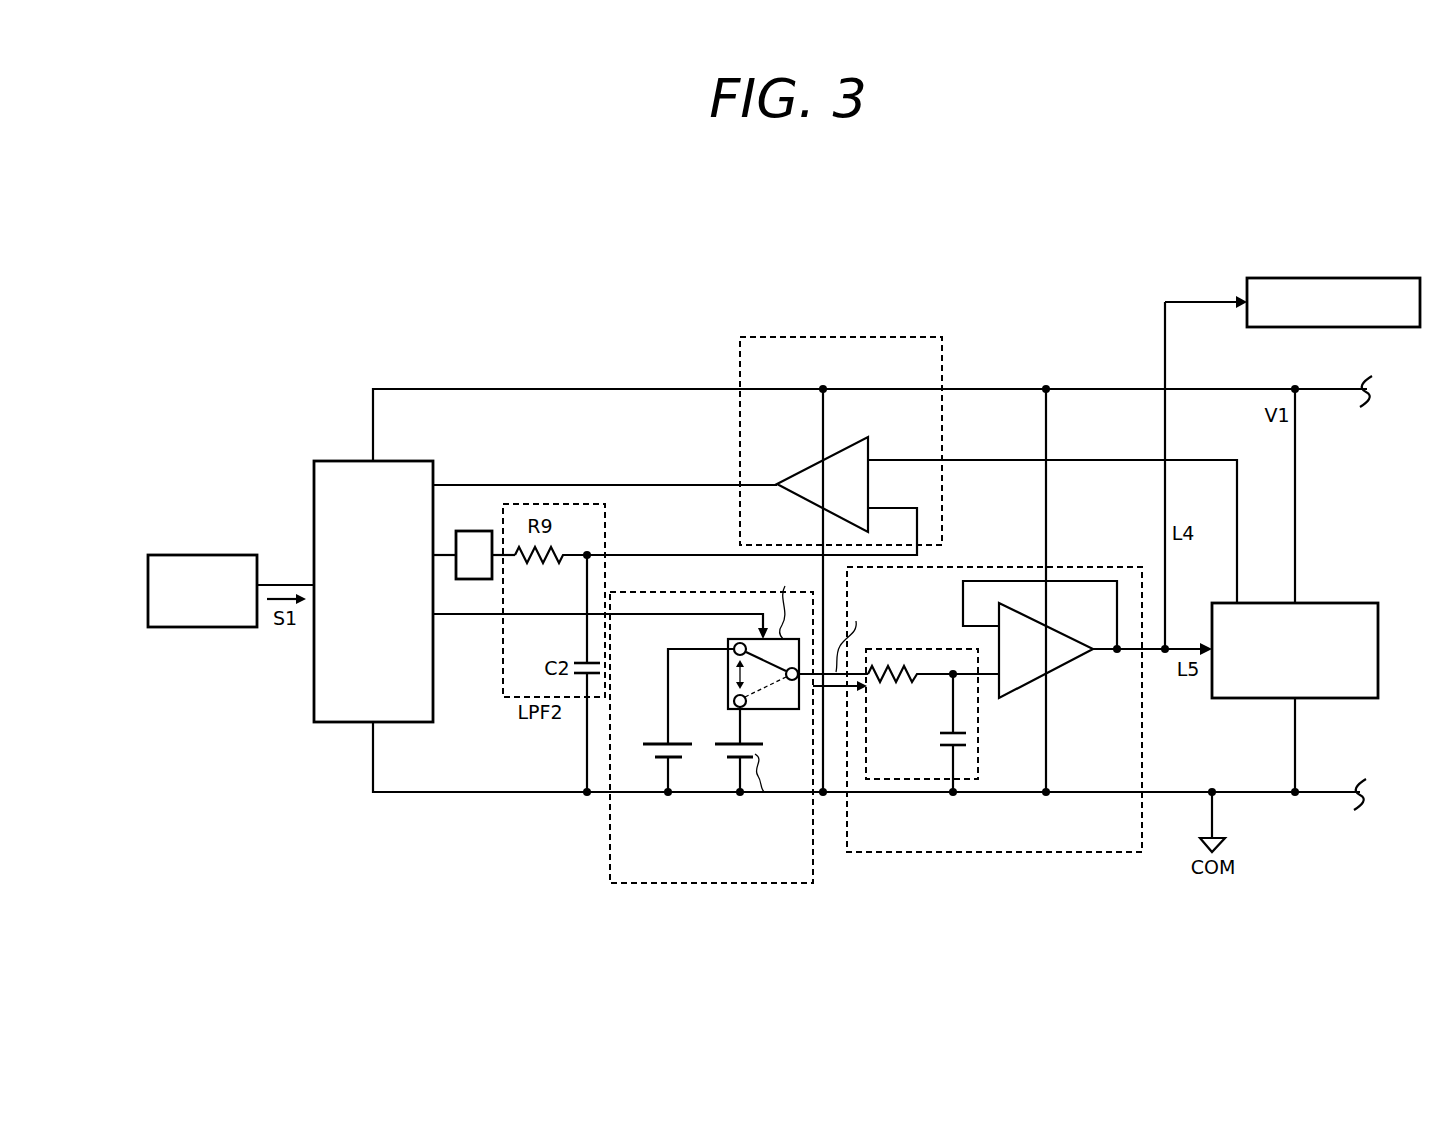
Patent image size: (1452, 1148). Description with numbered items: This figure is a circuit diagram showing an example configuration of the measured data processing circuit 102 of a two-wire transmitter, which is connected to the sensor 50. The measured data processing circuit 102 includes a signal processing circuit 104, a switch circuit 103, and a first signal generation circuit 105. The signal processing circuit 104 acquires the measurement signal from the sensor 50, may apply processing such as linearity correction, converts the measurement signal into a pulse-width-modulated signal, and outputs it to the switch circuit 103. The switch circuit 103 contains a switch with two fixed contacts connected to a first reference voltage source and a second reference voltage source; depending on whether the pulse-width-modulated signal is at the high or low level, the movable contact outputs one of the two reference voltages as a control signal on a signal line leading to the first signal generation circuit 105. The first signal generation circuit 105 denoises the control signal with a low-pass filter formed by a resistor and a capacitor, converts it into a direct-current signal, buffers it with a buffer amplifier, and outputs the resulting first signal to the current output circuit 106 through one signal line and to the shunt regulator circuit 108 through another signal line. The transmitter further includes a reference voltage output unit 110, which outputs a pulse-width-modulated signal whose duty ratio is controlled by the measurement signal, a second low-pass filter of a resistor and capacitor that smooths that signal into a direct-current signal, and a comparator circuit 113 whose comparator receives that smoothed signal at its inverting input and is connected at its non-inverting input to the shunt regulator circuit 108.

The sensor 50 is at (203, 555).
The measured data processing circuit 102 is at (517, 324).
The switch circuit 103 is at (713, 883).
The signal processing circuit 104 is at (340, 461).
The first signal generation circuit 105 is at (993, 852).
The current output circuit 106 is at (1333, 278).
The shunt regulator circuit 108 is at (1340, 603).
The reference voltage output unit 110 is at (474, 531).
The comparator circuit 113 is at (838, 337).